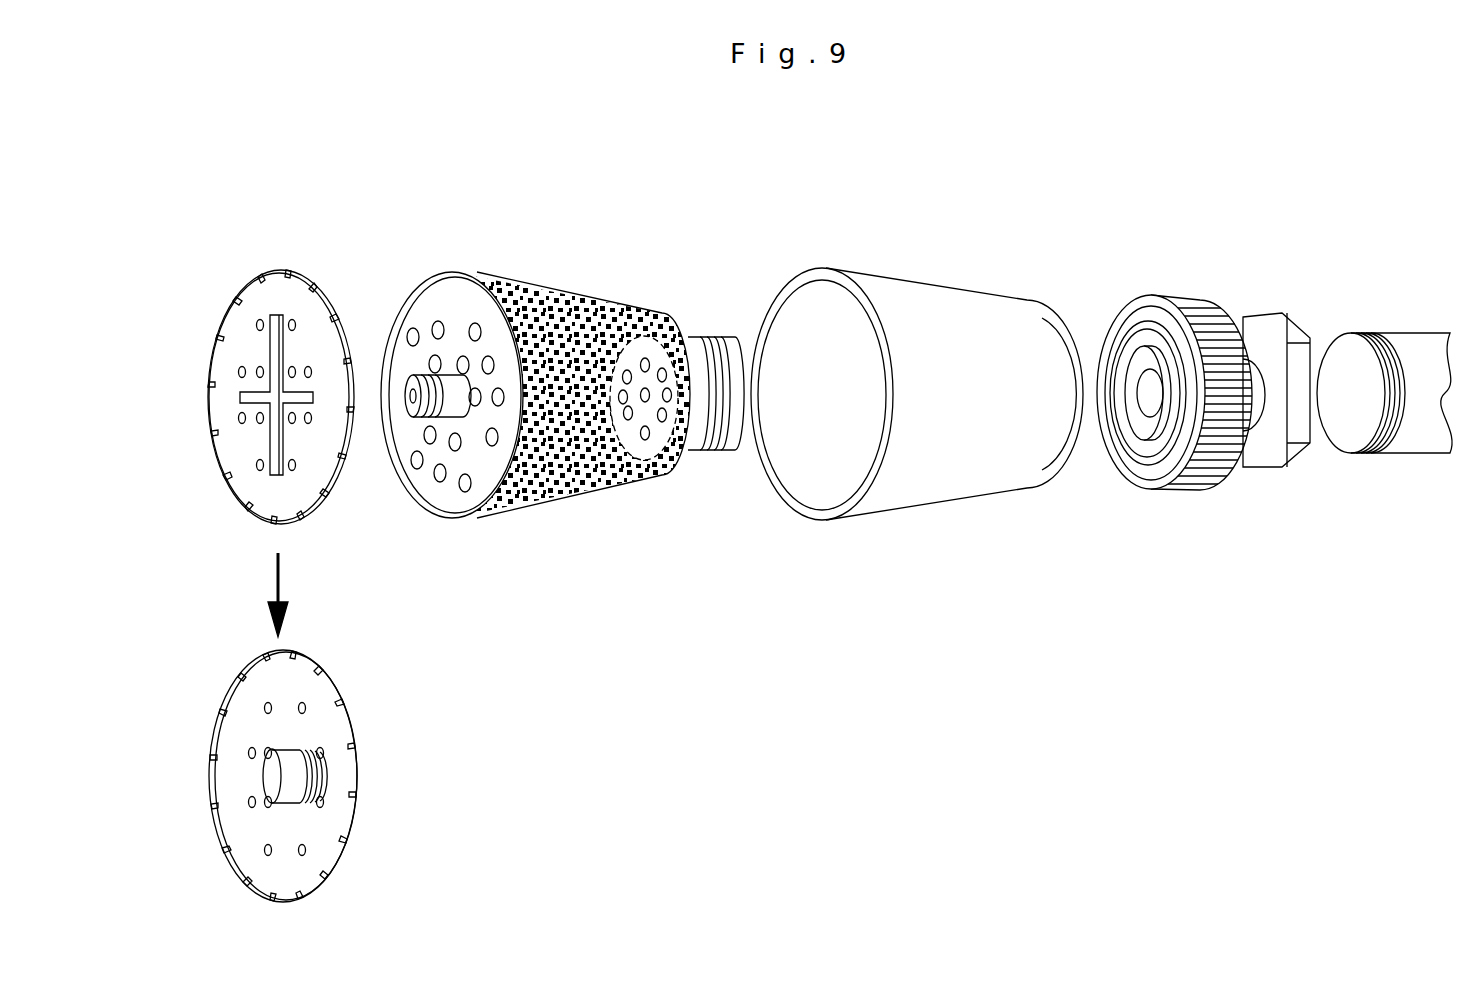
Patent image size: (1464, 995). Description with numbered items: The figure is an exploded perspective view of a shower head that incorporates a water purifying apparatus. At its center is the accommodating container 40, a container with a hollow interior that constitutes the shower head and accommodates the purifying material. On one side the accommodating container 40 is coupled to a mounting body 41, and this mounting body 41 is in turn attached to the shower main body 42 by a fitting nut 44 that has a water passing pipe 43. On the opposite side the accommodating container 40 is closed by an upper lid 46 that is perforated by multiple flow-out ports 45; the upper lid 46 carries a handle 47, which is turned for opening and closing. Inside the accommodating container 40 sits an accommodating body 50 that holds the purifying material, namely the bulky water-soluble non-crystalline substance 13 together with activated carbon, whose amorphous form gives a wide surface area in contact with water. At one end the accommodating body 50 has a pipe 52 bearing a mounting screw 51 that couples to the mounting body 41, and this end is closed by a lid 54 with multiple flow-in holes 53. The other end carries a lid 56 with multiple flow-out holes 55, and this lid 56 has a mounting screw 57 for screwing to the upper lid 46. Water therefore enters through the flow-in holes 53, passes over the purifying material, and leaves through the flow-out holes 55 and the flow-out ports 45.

The water-soluble non-crystalline substance 13 is at (558, 485).
The accommodating container 40 is at (936, 276).
The mounting body 41 is at (1225, 287).
The shower main body 42 is at (1401, 326).
The water passing pipe 43 is at (1259, 406).
The fitting nut 44 is at (1288, 451).
The flow-out ports 45 is at (310, 367).
The upper lid 46 is at (246, 522).
The handle 47 is at (272, 396).
The accommodating body 50 is at (571, 380).
The mounting screw 51 is at (720, 436).
The pipe 52 is at (693, 441).
The flow-in holes 53 is at (664, 423).
The lid 54 is at (664, 368).
The flow-out holes 55 is at (488, 447).
The lid 56 is at (448, 303).
The mounting screw 57 is at (420, 416).